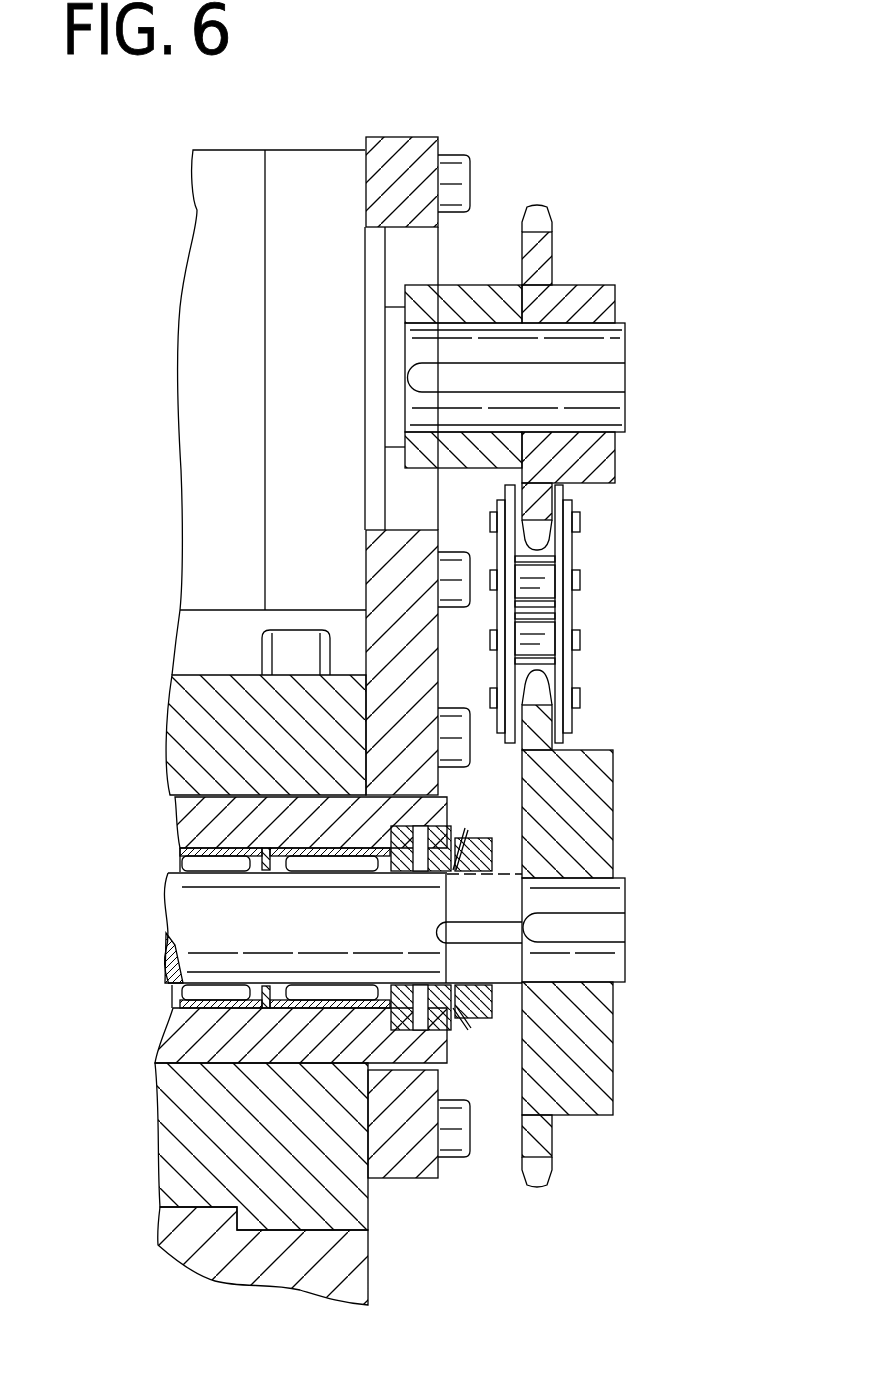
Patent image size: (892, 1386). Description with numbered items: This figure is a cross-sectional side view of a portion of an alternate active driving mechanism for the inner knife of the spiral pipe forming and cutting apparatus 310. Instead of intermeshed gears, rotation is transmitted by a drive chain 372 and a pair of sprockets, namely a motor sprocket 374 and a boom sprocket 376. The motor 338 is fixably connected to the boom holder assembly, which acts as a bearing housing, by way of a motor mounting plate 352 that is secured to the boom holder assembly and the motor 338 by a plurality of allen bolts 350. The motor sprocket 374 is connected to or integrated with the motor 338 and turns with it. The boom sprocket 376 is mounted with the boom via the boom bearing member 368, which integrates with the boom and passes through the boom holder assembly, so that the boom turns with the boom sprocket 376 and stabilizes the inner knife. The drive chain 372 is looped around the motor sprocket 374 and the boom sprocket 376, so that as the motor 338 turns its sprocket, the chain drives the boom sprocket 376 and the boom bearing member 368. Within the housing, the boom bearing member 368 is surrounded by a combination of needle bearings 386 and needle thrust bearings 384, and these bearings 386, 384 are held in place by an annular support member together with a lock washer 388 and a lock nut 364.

The spiral pipe forming and cutting apparatus 310 is at (655, 160).
The motor 338 is at (223, 170).
The allen bolts 350 is at (460, 192).
The motor mounting plate 352 is at (413, 152).
The lock nut 364 is at (463, 1013).
The boom bearing member 368 is at (608, 900).
The drive chain 372 is at (542, 578).
The motor sprocket 374 is at (600, 300).
The boom sprocket 376 is at (593, 805).
The needle thrust bearings 384 is at (428, 838).
The needle bearings 386 is at (307, 866).
The lock washer 388 is at (494, 820).